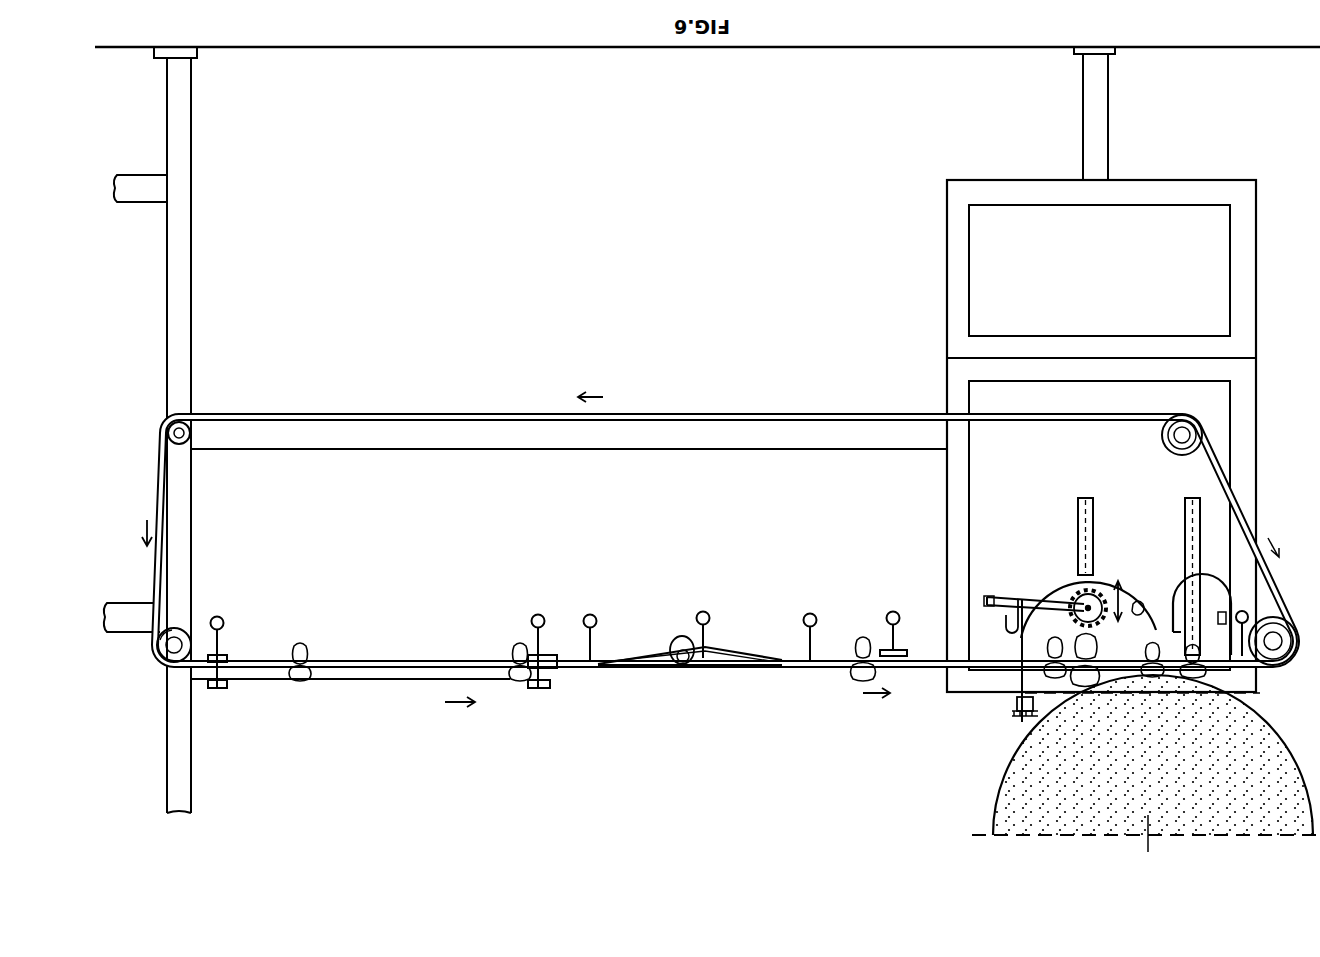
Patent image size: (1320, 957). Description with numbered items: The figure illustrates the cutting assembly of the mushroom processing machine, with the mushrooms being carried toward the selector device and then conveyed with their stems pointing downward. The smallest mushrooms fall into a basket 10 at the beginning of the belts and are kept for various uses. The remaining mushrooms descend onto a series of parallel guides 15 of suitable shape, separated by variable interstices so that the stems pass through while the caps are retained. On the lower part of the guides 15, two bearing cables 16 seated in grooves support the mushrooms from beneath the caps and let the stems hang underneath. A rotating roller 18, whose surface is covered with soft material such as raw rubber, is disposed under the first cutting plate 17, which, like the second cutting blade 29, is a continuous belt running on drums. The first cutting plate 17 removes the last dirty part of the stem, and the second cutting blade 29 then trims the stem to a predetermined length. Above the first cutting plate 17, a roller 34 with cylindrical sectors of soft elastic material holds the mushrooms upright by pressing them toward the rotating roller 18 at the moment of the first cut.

The basket 10 is at (807, 626).
The parallel guides 15 is at (727, 668).
The bearing cables 16 is at (727, 660).
The first cutting plate 17 is at (1077, 503).
The rotating roller 18 is at (1073, 598).
The second cutting blade 29 is at (1185, 503).
The roller with cylindrical sectors 34 is at (1037, 772).